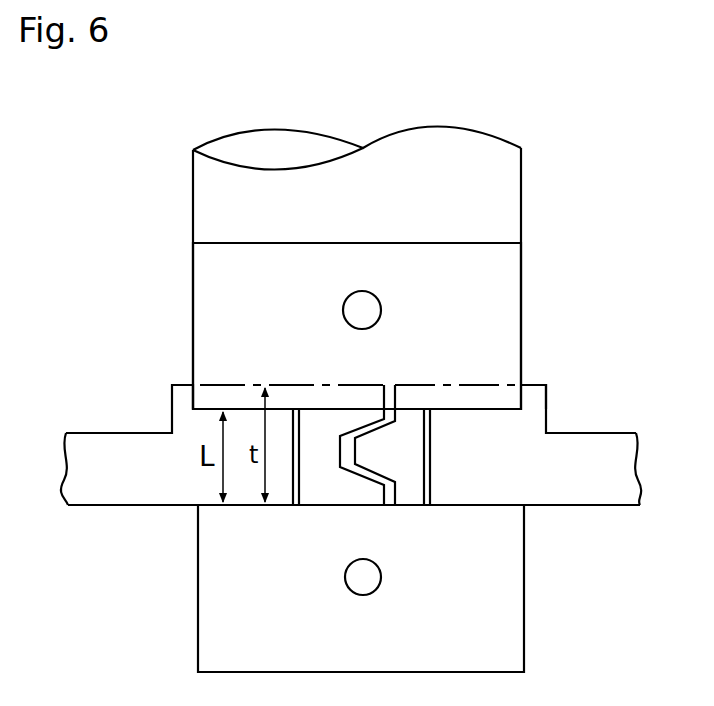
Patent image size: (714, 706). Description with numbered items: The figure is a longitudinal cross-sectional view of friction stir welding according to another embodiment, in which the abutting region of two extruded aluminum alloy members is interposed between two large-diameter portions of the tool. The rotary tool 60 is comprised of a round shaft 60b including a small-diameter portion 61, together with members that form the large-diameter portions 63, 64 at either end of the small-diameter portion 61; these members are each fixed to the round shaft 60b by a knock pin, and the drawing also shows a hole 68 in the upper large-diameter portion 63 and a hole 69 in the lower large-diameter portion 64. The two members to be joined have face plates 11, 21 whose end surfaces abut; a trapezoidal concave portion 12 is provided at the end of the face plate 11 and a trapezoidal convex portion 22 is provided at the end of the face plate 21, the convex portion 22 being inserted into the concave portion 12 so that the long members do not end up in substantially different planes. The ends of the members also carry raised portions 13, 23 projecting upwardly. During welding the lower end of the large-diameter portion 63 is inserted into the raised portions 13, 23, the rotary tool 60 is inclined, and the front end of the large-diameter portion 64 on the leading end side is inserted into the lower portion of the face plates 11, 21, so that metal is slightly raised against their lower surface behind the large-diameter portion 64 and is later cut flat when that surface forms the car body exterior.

The rotary tool 60 is at (548, 143).
The round shaft 60b is at (505, 193).
The large-diameter portion 63 is at (503, 282).
The hole 68 is at (380, 301).
The large-diameter portion 64 is at (512, 627).
The hole 69 is at (381, 577).
The face plate 11 is at (110, 462).
The raised portion 13 is at (183, 393).
The face plate 21 is at (600, 462).
The raised portion 23 is at (535, 396).
The small-diameter portion 61 is at (433, 460).
The concave portion 12 is at (333, 456).
The convex portion 22 is at (363, 452).